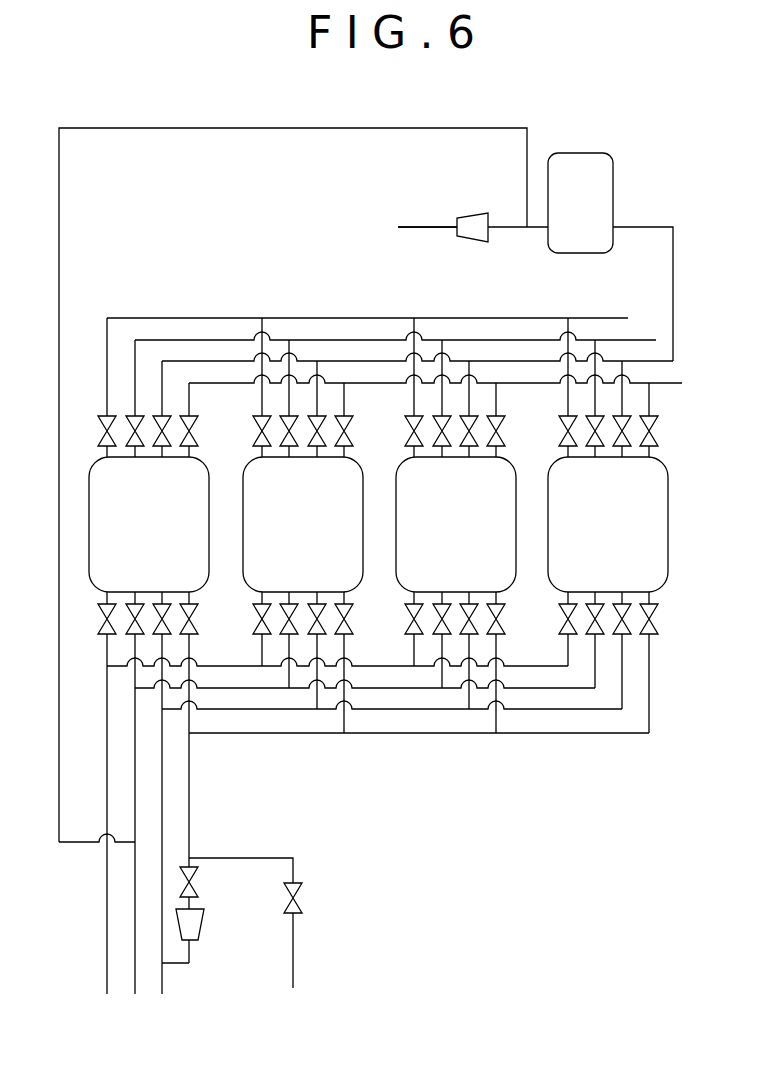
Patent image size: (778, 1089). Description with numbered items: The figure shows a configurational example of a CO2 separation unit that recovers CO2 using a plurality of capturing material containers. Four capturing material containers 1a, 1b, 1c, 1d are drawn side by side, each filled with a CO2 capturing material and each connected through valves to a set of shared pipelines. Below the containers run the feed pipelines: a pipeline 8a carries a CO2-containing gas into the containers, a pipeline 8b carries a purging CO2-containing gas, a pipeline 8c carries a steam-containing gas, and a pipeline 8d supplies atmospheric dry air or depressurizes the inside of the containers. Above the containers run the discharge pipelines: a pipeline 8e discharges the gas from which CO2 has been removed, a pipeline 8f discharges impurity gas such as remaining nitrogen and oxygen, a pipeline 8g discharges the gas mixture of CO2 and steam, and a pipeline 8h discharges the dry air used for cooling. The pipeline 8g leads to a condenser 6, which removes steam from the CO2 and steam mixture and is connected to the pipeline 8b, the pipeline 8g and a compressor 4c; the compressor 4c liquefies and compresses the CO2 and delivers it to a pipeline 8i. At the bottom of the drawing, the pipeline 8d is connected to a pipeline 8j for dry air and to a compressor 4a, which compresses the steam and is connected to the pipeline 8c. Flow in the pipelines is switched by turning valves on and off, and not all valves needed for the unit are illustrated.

The capturing material container 1a is at (89, 495).
The capturing material container 1b is at (243, 495).
The capturing material container 1c is at (396, 495).
The capturing material container 1d is at (548, 495).
The compressor 4a is at (204, 925).
The compressor 4c is at (478, 213).
The condenser 6 is at (613, 177).
The pipeline 8a is at (104, 908).
The pipeline 8b is at (132, 908).
The pipeline 8c is at (160, 908).
The pipeline 8d is at (191, 808).
The pipeline 8e is at (513, 318).
The pipeline 8f is at (633, 340).
The pipeline 8g is at (676, 330).
The pipeline 8h is at (682, 383).
The pipeline 8i is at (428, 227).
The pipeline 8j is at (295, 950).